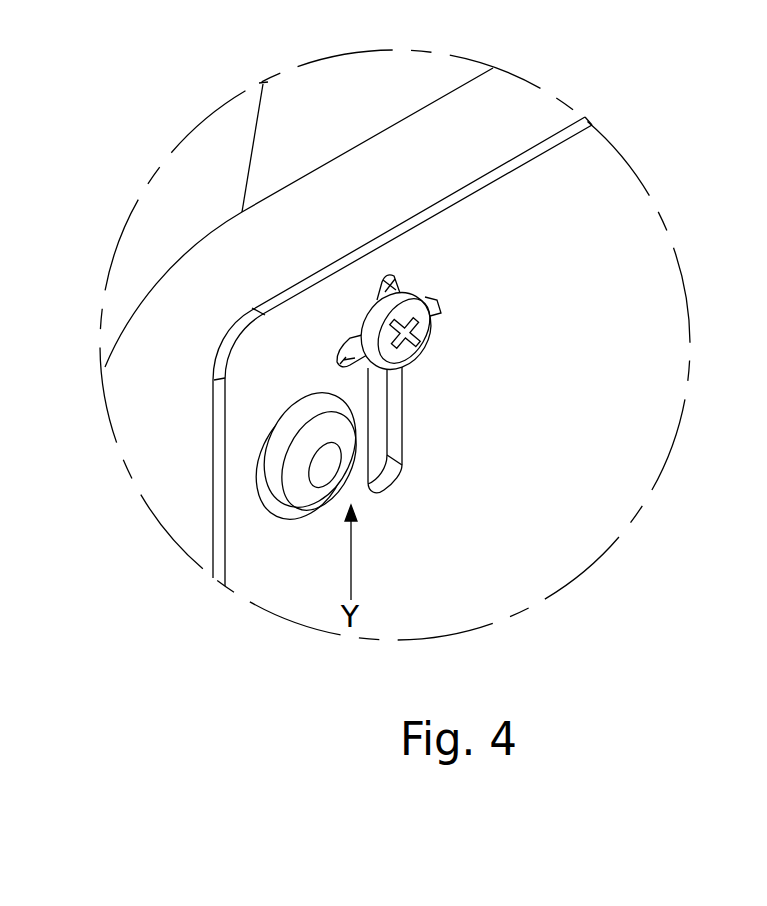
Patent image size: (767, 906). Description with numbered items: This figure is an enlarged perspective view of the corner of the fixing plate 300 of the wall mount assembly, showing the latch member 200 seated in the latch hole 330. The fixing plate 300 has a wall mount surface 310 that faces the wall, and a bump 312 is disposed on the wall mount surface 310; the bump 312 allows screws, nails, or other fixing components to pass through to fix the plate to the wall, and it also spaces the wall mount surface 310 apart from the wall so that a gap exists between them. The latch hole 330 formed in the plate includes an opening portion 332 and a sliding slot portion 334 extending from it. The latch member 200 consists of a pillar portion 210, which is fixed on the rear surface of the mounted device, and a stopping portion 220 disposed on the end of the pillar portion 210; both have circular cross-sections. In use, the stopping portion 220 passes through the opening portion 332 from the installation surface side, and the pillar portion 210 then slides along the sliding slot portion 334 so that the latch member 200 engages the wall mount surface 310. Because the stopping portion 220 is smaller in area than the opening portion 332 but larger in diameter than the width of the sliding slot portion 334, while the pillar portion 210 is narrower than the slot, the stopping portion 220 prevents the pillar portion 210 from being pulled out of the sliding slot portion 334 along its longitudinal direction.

The fixing plate 300 is at (578, 188).
The wall mount surface 310 is at (560, 552).
The bump 312 is at (270, 497).
The latch member 200 is at (415, 245).
The pillar portion 210 is at (365, 316).
The stopping portion 220 is at (427, 325).
The latch hole 330 is at (440, 364).
The opening portion 332 is at (397, 283).
The sliding slot portion 334 is at (382, 410).